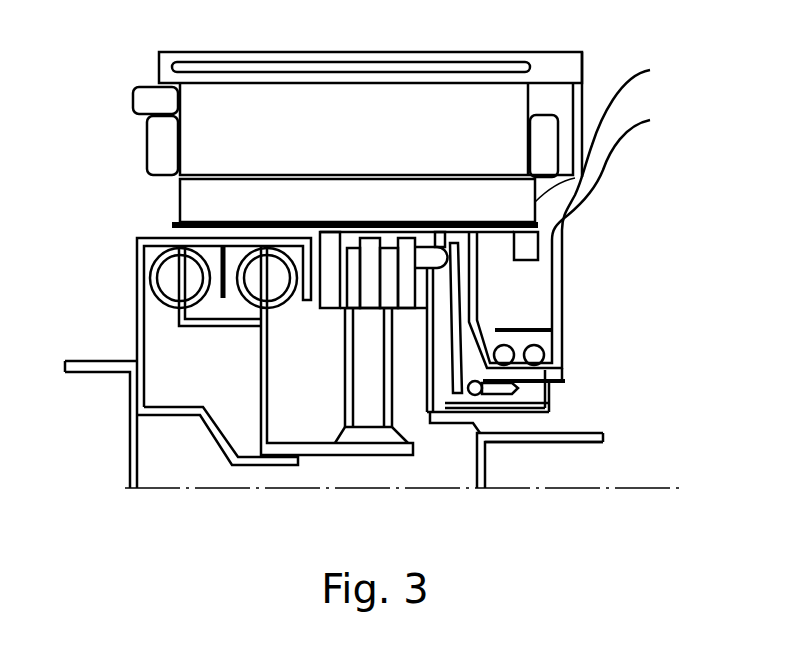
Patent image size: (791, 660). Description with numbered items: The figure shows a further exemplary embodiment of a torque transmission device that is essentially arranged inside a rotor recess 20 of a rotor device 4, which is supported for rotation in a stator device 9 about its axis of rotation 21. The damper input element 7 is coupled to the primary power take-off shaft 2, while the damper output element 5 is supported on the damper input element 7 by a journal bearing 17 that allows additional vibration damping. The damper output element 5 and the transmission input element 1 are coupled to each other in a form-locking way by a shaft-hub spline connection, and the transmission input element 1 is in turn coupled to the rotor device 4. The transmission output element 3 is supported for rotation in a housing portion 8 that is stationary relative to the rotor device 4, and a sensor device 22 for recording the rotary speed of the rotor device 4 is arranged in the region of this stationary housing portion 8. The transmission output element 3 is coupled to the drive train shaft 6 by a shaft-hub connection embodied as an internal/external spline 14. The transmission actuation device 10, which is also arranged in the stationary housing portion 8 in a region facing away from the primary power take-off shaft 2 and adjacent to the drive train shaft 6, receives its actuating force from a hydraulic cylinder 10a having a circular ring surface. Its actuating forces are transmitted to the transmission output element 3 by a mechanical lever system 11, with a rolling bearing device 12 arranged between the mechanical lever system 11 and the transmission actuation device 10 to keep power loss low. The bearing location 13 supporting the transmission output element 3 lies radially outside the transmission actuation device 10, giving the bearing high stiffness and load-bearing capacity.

The transmission input element 1 is at (402, 430).
The primary power take-off shaft 2 is at (90, 373).
The transmission output element 3 is at (165, 226).
The rotor device 4 is at (569, 211).
The damper output element 5 is at (178, 317).
The drive train shaft 6 is at (600, 433).
The damper input element 7 is at (137, 281).
The housing portion 8 is at (573, 235).
The stator device 9 is at (497, 105).
The transmission actuation device 10 is at (565, 397).
The hydraulic cylinder 10a is at (560, 393).
The mechanical lever system 11 is at (457, 343).
The rolling bearing device 12 is at (463, 395).
The bearing location 13 is at (524, 350).
The internal/external spline 14 is at (528, 443).
The journal bearing 17 is at (232, 463).
The rotor recess 20 is at (552, 270).
The axis of rotation 21 is at (280, 487).
The sensor device 22 is at (540, 246).